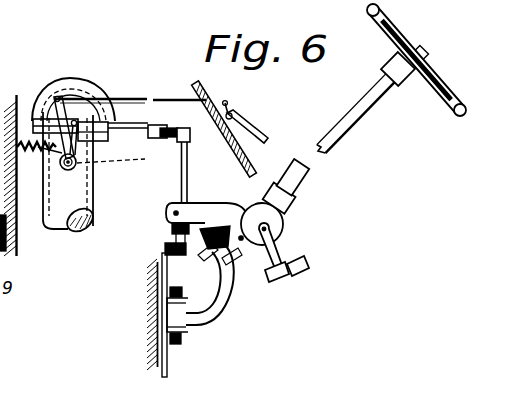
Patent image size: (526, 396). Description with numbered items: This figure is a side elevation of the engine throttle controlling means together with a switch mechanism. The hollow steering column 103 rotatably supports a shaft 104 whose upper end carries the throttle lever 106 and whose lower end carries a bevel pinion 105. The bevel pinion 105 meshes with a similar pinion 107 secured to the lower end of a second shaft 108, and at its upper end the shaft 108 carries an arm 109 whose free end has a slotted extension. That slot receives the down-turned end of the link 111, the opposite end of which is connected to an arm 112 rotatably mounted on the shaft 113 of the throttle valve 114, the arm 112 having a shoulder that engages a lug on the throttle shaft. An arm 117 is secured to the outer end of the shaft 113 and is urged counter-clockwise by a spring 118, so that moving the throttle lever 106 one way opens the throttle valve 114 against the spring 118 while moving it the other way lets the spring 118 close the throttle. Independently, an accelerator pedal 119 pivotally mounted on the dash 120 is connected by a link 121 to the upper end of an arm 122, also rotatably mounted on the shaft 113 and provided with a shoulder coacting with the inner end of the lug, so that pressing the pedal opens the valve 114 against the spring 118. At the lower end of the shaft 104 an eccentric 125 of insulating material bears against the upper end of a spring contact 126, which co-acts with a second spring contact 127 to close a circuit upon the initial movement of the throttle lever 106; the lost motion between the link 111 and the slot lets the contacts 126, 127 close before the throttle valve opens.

The steering column 103 is at (346, 131).
The shaft 104 is at (219, 278).
The bevel pinion 105 is at (240, 262).
The throttle lever 106 is at (424, 82).
The pinion 107 is at (173, 249).
The shaft 108 is at (181, 172).
The arm 109 is at (168, 131).
The link 111 is at (112, 124).
The arm 112 is at (78, 160).
The shaft 113 is at (77, 167).
The throttle valve 114 is at (127, 160).
The arm 117 is at (86, 100).
The spring 118 is at (30, 152).
The accelerator pedal 119 is at (250, 133).
The dash 120 is at (239, 160).
The link 121 is at (136, 97).
The arm 122 is at (34, 104).
The eccentric 125 is at (180, 231).
The spring contact 126 is at (210, 316).
The spring contact 127 is at (240, 299).